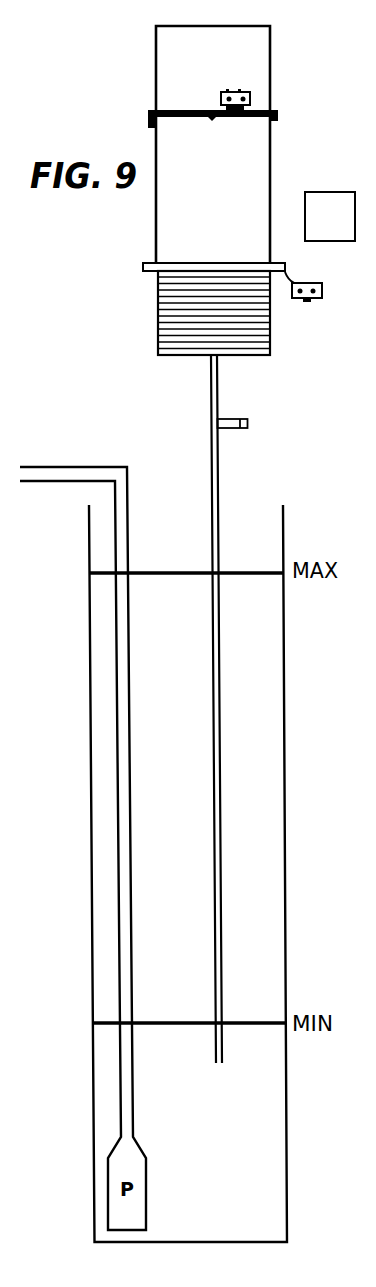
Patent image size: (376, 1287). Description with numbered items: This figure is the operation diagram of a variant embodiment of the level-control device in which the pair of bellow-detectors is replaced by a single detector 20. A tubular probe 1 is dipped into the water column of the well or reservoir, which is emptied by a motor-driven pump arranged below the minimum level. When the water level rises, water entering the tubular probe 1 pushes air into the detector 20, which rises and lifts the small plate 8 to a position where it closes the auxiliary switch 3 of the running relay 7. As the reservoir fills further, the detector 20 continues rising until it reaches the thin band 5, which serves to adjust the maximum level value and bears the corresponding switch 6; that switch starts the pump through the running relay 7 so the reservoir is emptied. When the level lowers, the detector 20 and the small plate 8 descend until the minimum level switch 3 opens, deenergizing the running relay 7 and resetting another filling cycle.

The tubular probe 1 is at (211, 445).
The auxiliary switch 3 is at (309, 300).
The thin band 5 is at (278, 118).
The level switch 6 is at (233, 92).
The running relay 7 is at (343, 203).
The small plate 8 is at (158, 273).
The single detector 20 is at (178, 326).